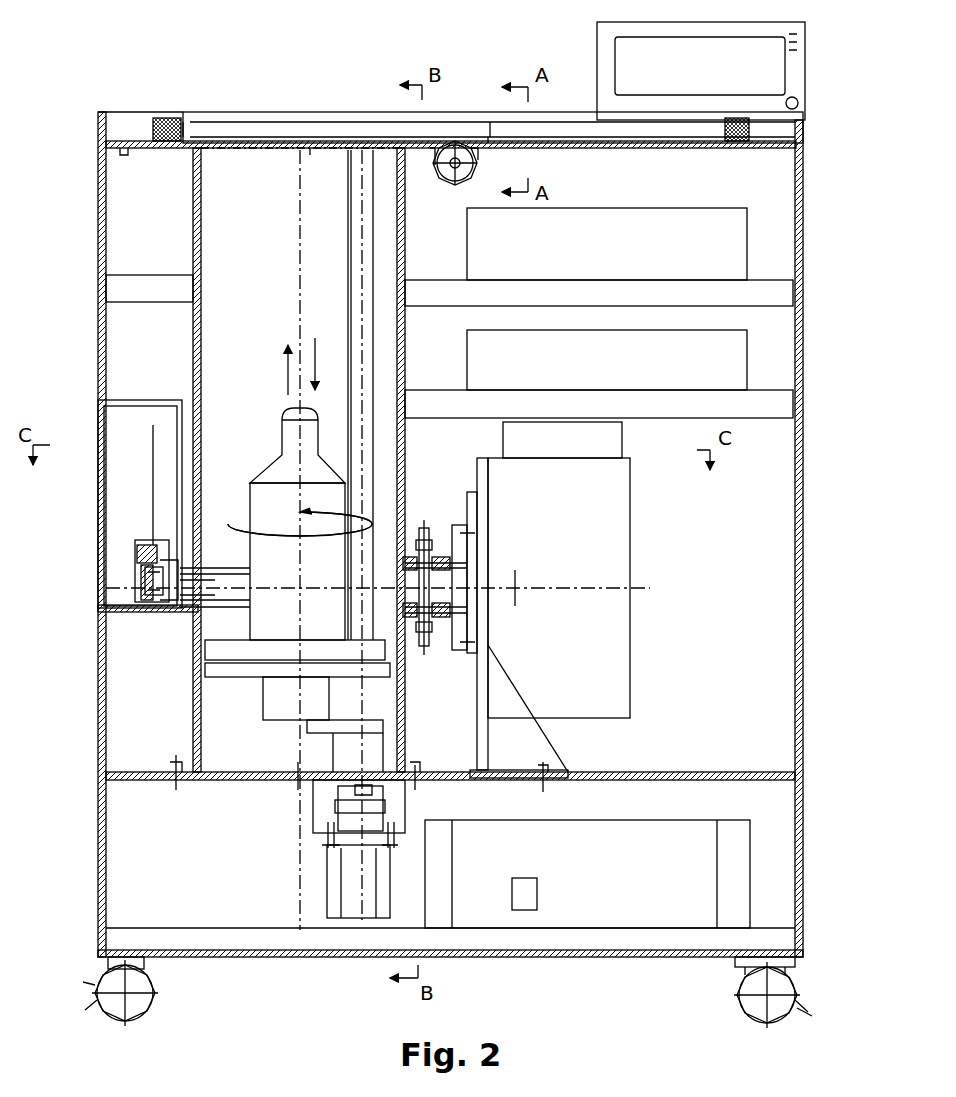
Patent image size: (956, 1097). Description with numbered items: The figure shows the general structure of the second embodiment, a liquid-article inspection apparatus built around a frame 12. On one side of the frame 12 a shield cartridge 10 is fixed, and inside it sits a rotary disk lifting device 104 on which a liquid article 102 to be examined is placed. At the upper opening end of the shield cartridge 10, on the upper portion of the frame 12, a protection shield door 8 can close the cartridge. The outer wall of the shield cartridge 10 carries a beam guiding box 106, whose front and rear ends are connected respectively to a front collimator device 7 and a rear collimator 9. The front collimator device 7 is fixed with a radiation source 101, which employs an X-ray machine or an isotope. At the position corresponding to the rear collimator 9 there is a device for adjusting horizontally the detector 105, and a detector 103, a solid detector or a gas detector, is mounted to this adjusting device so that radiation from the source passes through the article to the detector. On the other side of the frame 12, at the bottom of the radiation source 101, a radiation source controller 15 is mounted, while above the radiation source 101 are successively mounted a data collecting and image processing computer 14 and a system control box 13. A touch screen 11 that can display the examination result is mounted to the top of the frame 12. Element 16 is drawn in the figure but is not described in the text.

The front collimator device 7 is at (437, 597).
The protection shield door 8 is at (241, 127).
The rear collimator 9 is at (140, 567).
The shield cartridge 10 is at (201, 258).
The touch screen 11 is at (768, 72).
The frame 12 is at (806, 190).
The system control box 13 is at (702, 268).
The data collecting and image processing computer 14 is at (693, 358).
The radiation source controller 15 is at (685, 893).
The side housing 16 is at (125, 402).
The radiation source 101 is at (603, 550).
The liquid article 102 is at (287, 463).
The detector 103 is at (137, 576).
The rotary disk lifting device 104 is at (220, 648).
The device for adjusting horizontally the detector 105 is at (134, 548).
The beam guiding box 106 is at (173, 575).